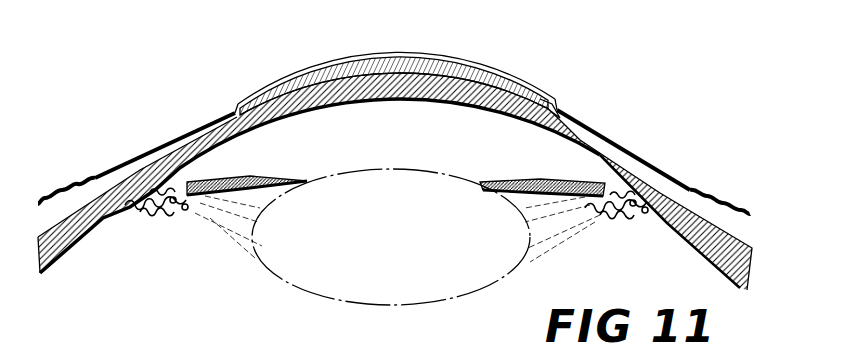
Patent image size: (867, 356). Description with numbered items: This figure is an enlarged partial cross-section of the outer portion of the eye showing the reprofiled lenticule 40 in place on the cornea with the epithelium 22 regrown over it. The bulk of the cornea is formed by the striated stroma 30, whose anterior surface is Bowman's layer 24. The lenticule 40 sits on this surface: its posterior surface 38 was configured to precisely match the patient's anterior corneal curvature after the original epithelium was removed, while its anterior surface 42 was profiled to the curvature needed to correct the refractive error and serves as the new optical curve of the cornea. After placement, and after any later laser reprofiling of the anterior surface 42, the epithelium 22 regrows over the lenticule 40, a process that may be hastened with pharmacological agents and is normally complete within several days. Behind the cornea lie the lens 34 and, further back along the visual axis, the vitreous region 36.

The epithelium 22 is at (290, 74).
The Bowman's layer 24 is at (325, 80).
The stroma 30 is at (393, 90).
The lens 34 is at (432, 287).
The vitreous region 36 is at (198, 291).
The posterior surface of the lenticule 38 is at (487, 90).
The lenticule 40 is at (428, 56).
The anterior surface of the lenticule 42 is at (370, 57).